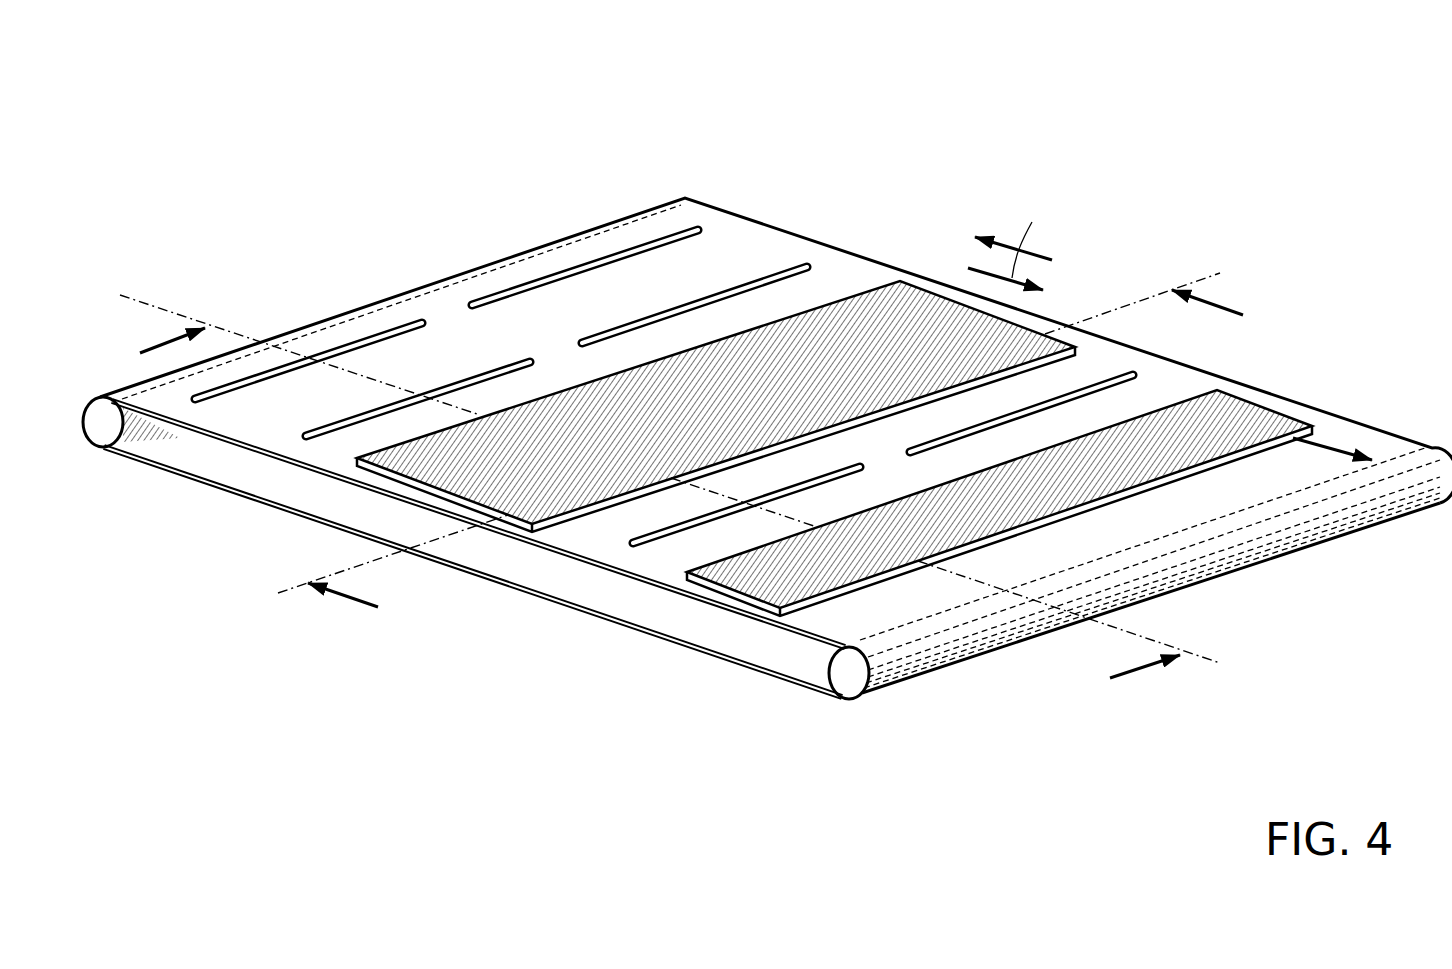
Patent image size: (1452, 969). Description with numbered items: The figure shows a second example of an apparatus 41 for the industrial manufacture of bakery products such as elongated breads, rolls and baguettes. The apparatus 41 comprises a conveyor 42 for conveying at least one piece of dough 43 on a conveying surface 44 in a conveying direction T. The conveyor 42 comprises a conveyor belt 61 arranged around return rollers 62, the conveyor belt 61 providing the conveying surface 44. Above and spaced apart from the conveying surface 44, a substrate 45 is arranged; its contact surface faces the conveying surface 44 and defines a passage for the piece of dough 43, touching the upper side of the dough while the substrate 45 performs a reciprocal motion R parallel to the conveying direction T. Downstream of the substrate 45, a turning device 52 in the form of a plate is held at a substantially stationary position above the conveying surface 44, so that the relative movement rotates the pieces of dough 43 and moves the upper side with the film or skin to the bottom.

The apparatus 41 is at (878, 152).
The conveyor 42 is at (777, 675).
The piece of dough 43 is at (613, 332).
The conveying surface 44 is at (902, 616).
The substrate 45 is at (1017, 327).
The turning device 52 is at (1267, 413).
The conveyor belt 61 is at (250, 447).
The return rollers 62 is at (107, 432).